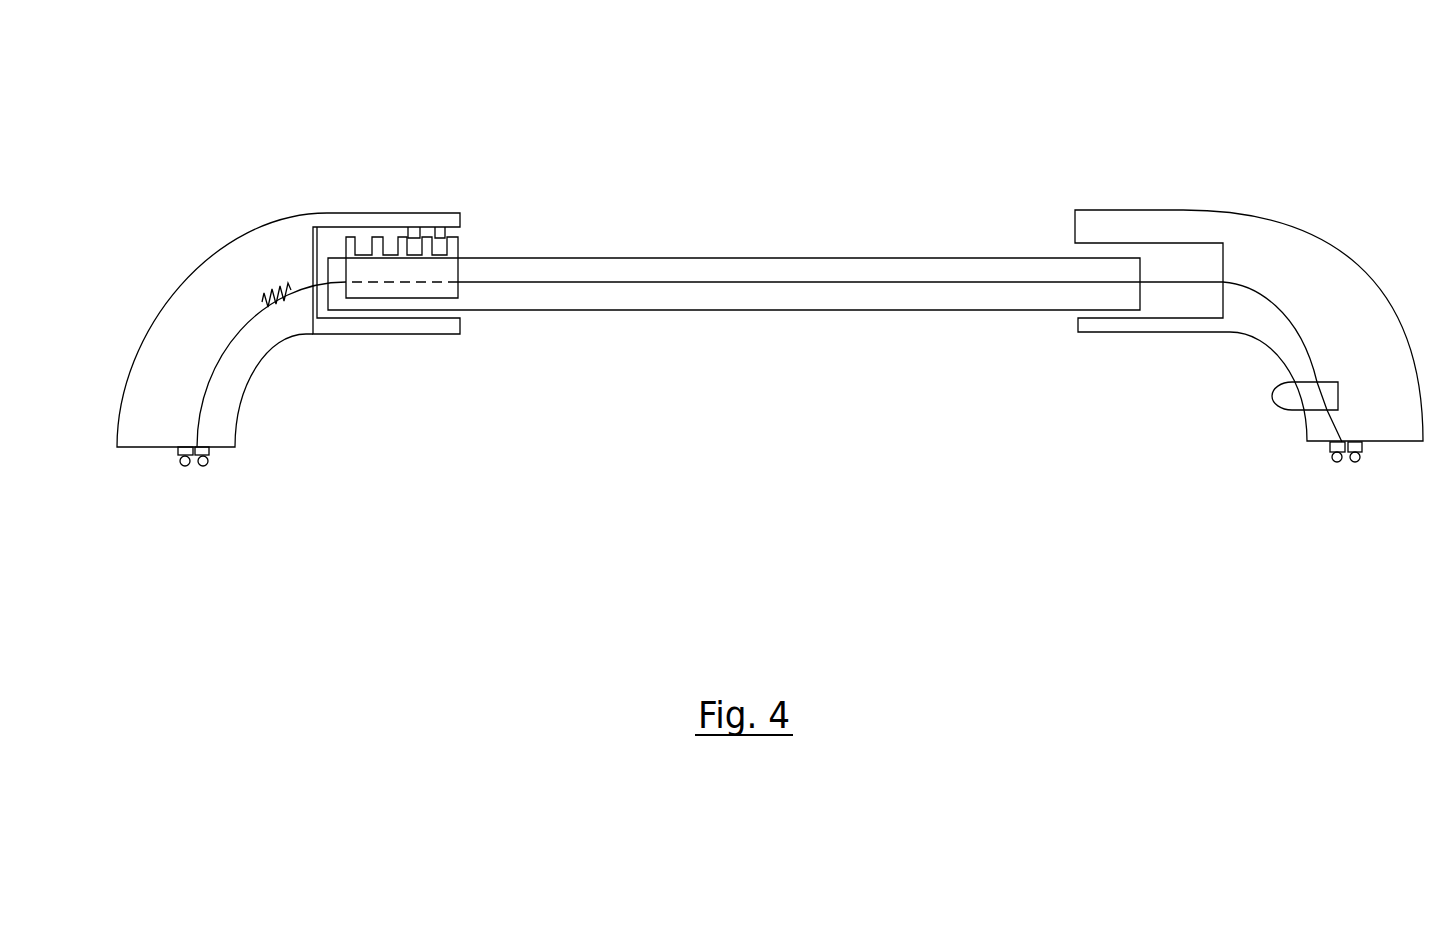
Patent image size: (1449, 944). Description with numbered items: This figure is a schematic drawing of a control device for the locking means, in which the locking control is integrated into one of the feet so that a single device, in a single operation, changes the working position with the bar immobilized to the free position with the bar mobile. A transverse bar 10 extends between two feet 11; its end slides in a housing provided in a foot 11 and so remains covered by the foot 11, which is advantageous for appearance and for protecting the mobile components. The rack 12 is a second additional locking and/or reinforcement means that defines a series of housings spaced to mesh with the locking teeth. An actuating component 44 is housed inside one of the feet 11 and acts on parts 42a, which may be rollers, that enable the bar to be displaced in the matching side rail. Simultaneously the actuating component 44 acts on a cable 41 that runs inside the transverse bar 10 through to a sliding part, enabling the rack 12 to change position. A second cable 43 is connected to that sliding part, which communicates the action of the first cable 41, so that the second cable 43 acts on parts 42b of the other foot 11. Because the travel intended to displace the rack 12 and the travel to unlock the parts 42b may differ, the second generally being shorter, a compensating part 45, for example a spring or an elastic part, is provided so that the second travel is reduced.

The transverse bar 10 is at (952, 302).
The foot 11 is at (213, 278).
The rack 12 is at (447, 288).
The cable 41 is at (1290, 403).
The parts 42a is at (1348, 465).
The parts 42b is at (208, 467).
The second cable 43 is at (218, 368).
The actuating component 44 is at (824, 282).
The compensating part 45 is at (277, 282).